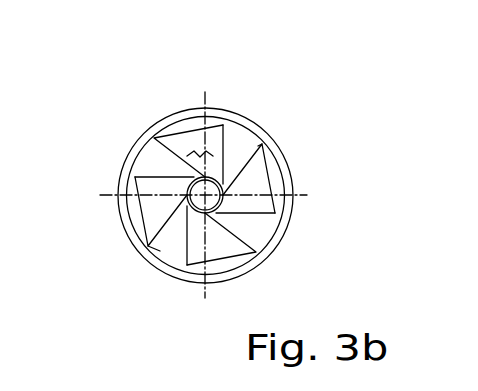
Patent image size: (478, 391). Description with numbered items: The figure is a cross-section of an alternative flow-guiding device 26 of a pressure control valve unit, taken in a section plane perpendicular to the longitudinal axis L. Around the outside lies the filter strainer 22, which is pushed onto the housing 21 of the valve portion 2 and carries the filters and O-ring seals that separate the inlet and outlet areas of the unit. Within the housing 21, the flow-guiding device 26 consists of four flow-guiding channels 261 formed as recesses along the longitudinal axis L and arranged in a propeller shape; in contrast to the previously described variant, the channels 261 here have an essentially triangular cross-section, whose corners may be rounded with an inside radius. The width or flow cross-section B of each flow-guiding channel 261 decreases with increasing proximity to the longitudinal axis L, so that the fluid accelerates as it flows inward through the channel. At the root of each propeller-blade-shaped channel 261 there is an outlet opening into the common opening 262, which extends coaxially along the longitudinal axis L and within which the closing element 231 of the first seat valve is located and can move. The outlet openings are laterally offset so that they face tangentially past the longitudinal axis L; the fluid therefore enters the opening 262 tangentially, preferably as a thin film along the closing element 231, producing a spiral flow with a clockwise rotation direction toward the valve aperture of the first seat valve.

The valve portion 2 is at (246, 145).
The housing 21 is at (257, 228).
The filter strainer 22 is at (290, 217).
The flow-guiding device 26 is at (202, 167).
The closing element 231 is at (260, 145).
The flow-guiding channels 261 is at (156, 137).
The common opening 262 is at (160, 251).
The width or flow cross-section B is at (193, 150).
The longitudinal axis L is at (190, 178).